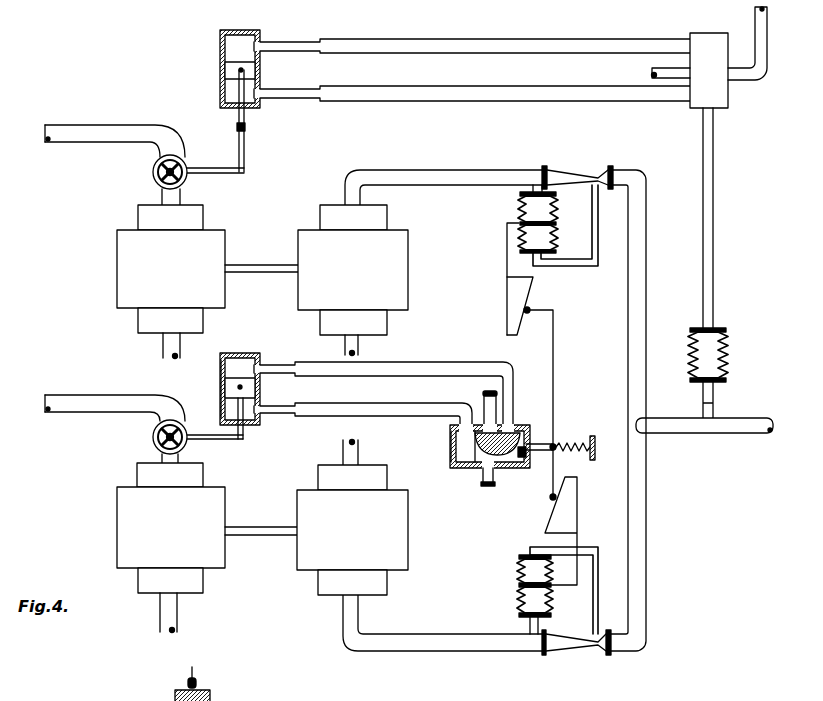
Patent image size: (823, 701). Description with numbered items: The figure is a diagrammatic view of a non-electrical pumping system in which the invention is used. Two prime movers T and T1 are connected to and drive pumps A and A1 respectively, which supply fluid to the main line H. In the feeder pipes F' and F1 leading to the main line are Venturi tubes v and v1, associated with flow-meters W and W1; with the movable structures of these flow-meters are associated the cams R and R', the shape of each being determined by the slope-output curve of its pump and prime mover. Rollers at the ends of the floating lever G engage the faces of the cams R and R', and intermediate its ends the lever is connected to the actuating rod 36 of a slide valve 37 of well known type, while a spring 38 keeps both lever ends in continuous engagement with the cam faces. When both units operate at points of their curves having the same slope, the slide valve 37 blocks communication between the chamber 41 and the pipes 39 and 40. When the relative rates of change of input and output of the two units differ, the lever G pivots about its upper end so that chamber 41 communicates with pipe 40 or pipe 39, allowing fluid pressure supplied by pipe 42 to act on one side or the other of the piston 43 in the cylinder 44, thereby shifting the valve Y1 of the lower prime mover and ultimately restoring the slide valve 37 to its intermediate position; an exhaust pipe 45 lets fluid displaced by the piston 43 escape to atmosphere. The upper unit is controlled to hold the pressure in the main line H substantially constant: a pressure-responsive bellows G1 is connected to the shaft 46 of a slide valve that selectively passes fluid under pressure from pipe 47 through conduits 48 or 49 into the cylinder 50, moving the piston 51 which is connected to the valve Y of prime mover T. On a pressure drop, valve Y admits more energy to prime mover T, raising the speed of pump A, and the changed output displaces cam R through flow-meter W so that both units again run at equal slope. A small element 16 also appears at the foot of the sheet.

The conduit 48 is at (555, 46).
The conduit 49 is at (555, 92).
The cylinder 50 is at (220, 60).
The piston 51 is at (258, 72).
The pipe 47 is at (652, 73).
The shaft 46 is at (713, 137).
The valve Y is at (184, 160).
The feeder pipe F' is at (443, 172).
The Venturi tube v is at (562, 178).
The flow-meter W is at (518, 210).
The prime mover T is at (171, 282).
The pump A is at (353, 280).
The cam R is at (531, 279).
The lever G is at (556, 378).
The bellows G1 is at (729, 341).
The main line H is at (683, 434).
The piston 43 is at (240, 380).
The cylinder 44 is at (220, 372).
The pipe 40 is at (450, 364).
The pipe 39 is at (440, 420).
The exhaust pipe 45 is at (483, 402).
The slide valve 37 is at (490, 462).
The chamber 41 is at (462, 458).
The pipe 42 is at (486, 486).
The actuating rod 36 is at (524, 444).
The spring 38 is at (572, 444).
The valve Y1 is at (184, 421).
The prime mover T1 is at (171, 548).
The pump A1 is at (352, 518).
The cam R' is at (576, 531).
The flow-meter W1 is at (517, 600).
The Venturi tube v1 is at (568, 647).
The feeder pipe F1 is at (458, 653).
The valve 16 is at (212, 695).